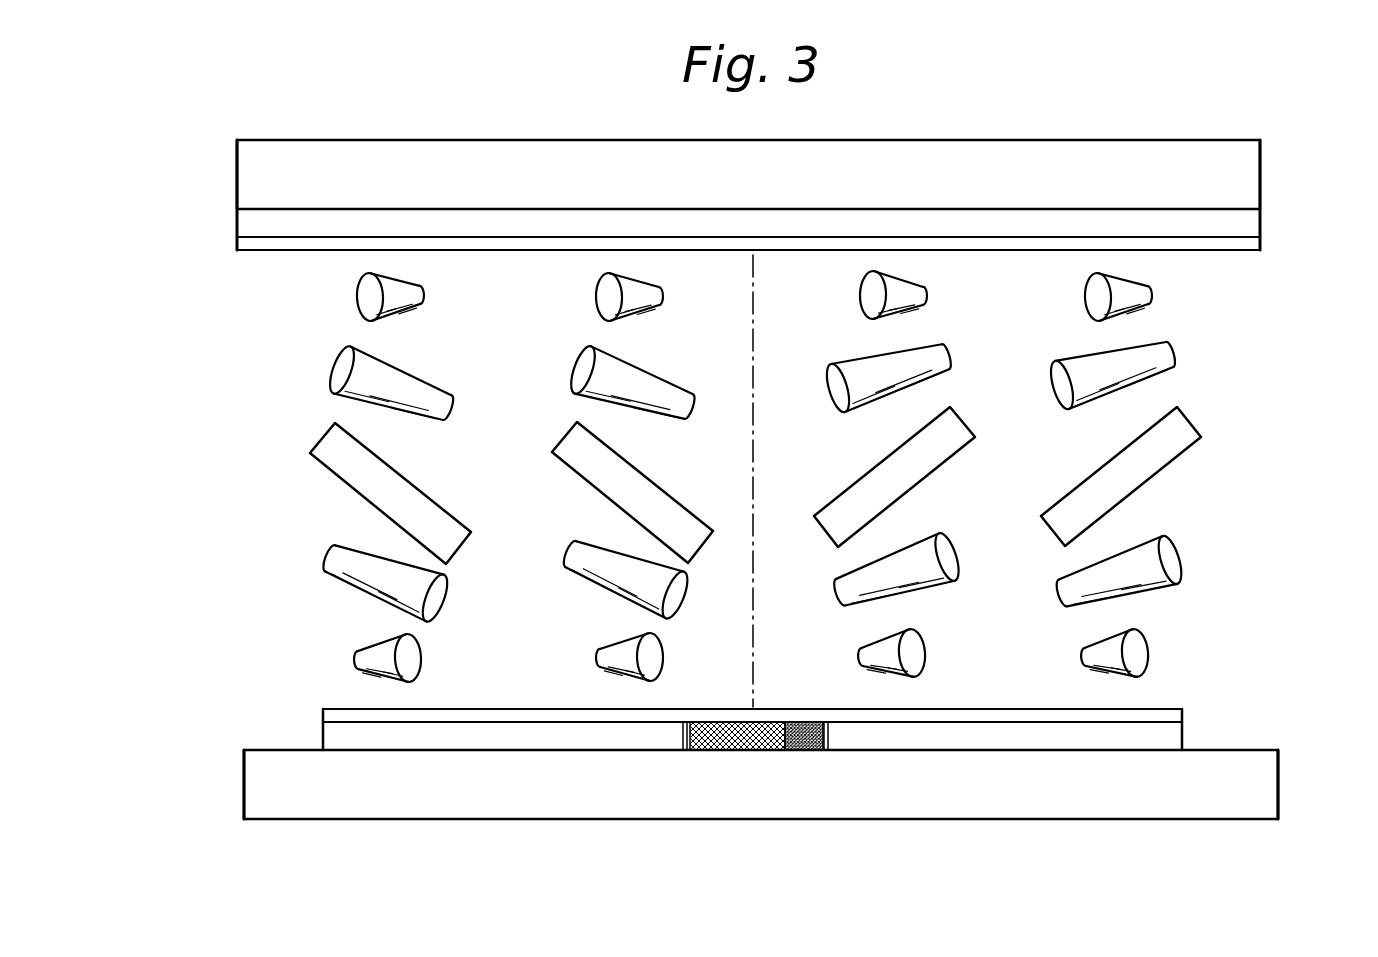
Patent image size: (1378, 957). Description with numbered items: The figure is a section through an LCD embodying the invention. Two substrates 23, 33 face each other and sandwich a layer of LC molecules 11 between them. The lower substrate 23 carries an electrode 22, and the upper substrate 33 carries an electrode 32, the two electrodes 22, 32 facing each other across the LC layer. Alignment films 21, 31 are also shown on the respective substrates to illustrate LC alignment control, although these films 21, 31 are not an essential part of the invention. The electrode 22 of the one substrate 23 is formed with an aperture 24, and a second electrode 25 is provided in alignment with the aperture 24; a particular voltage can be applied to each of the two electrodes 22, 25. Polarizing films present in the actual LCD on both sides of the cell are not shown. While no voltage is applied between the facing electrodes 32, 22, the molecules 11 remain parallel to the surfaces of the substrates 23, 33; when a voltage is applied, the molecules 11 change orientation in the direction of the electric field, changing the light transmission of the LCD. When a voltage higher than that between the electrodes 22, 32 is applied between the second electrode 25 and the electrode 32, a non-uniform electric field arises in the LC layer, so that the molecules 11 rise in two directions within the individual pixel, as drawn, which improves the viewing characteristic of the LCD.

The LC molecules 11 is at (1199, 436).
The alignment film 21 is at (1182, 712).
The electrode 22 is at (1182, 735).
The substrate 23 is at (1278, 787).
The aperture 24 is at (818, 750).
The second electrode 25 is at (747, 750).
The alignment film 31 is at (1260, 247).
The electrode 32 is at (1257, 221).
The substrate 33 is at (1262, 163).